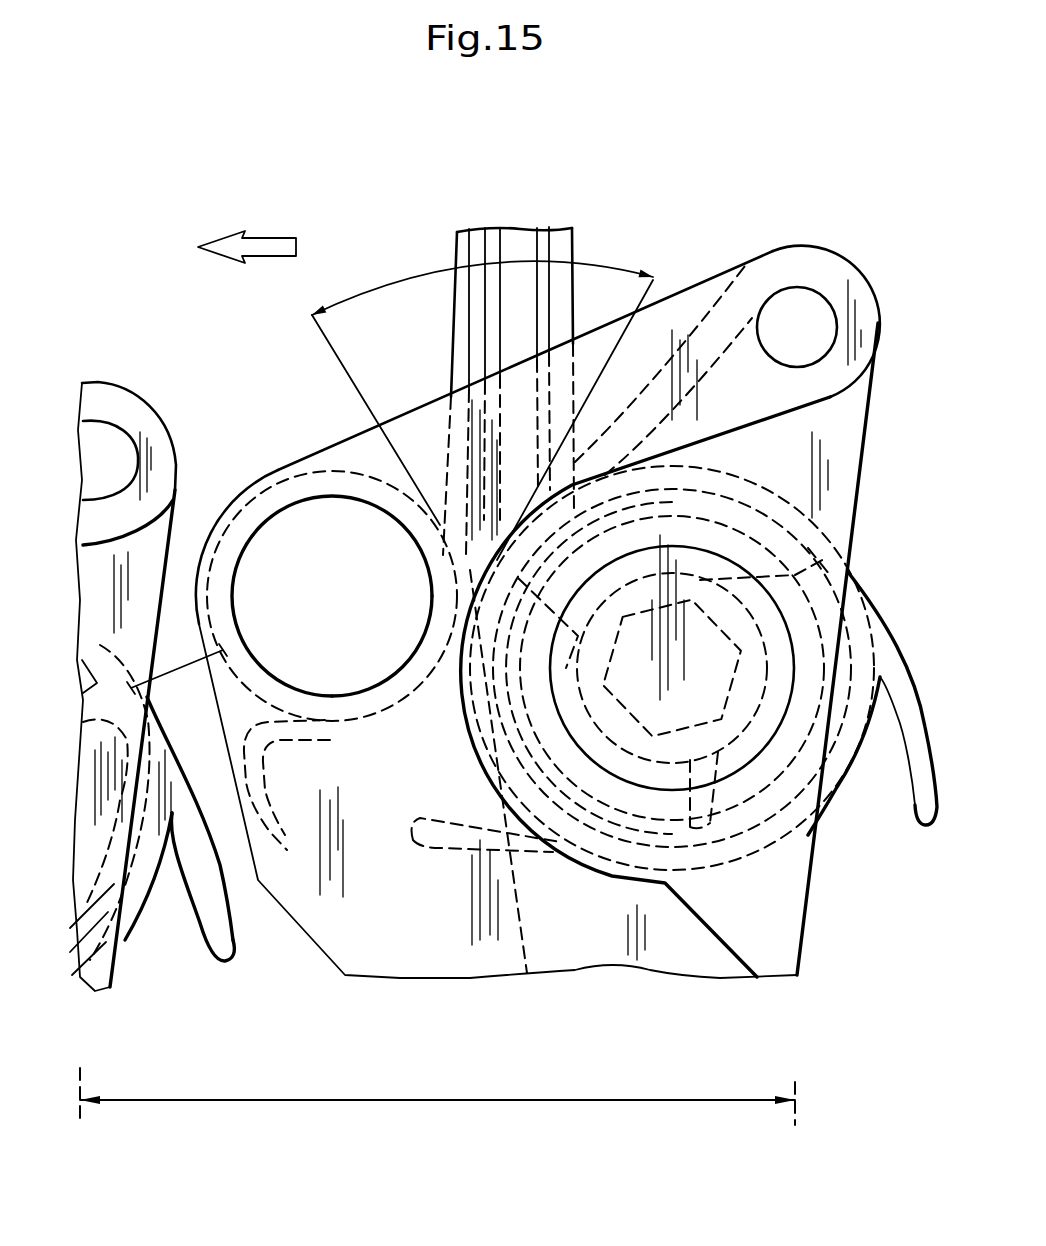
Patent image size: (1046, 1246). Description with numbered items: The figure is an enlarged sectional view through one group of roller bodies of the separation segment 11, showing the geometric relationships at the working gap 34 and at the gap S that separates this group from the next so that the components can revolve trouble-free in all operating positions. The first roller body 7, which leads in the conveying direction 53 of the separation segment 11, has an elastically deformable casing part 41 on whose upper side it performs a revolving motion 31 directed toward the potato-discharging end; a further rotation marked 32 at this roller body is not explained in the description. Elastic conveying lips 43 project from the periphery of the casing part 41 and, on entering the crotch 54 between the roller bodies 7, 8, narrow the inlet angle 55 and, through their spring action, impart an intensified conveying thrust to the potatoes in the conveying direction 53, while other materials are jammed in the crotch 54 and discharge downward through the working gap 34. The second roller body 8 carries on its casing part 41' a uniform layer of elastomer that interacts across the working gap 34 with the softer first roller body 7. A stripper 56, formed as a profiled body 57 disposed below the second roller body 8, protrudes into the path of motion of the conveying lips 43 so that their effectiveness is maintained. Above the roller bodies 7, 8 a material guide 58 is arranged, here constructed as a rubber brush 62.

The first roller body 7 is at (130, 940).
The second roller body 8 is at (378, 712).
The separation segment 11 is at (448, 1100).
The revolving motion 31 is at (652, 502).
The shaft 32 is at (370, 547).
The working gap 34 is at (455, 658).
The casing part 41 is at (685, 650).
The casing part 41' is at (382, 646).
The conveying lips 43 is at (670, 410).
The conveying direction 53 is at (272, 244).
The crotch 54 is at (474, 510).
The inlet angle 55 is at (408, 283).
The stripper 56 is at (280, 842).
The profiled body 57 is at (262, 798).
The material guide 58 is at (511, 226).
The rubber brush 62 is at (557, 245).
The gap S is at (177, 660).